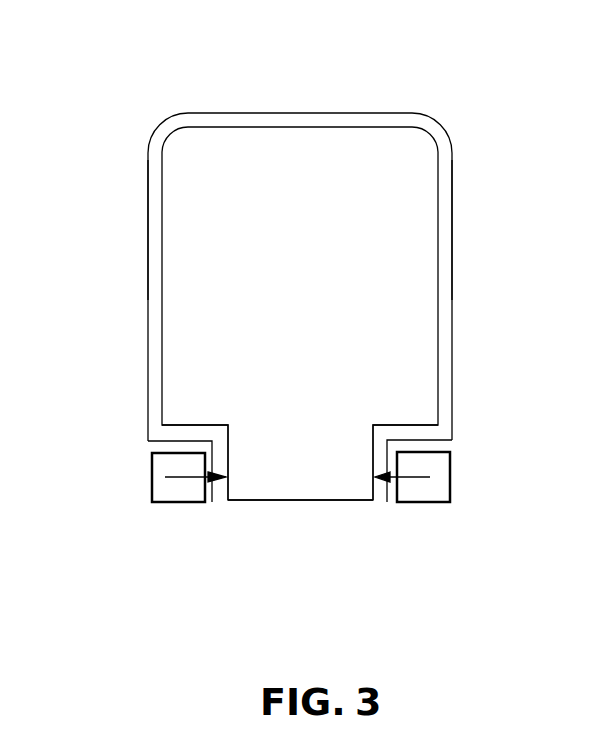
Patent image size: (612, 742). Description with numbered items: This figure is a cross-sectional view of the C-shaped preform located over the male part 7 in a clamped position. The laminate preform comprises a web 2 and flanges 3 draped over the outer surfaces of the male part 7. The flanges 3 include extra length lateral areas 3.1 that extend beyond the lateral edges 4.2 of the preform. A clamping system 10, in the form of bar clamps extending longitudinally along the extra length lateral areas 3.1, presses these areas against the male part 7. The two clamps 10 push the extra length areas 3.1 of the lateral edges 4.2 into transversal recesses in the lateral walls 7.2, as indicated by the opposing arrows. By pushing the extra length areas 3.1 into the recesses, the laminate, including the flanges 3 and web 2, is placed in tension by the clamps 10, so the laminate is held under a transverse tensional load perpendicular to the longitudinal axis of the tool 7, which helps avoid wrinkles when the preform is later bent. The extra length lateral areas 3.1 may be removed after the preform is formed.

The web 2 is at (380, 112).
The flange 3 is at (147, 240).
The male part 7 is at (408, 277).
The lateral edges 4.2 is at (157, 440).
The extra length lateral areas 3.1 is at (157, 443).
The lateral walls 7.2 is at (313, 465).
The clamping system 10 is at (180, 490).